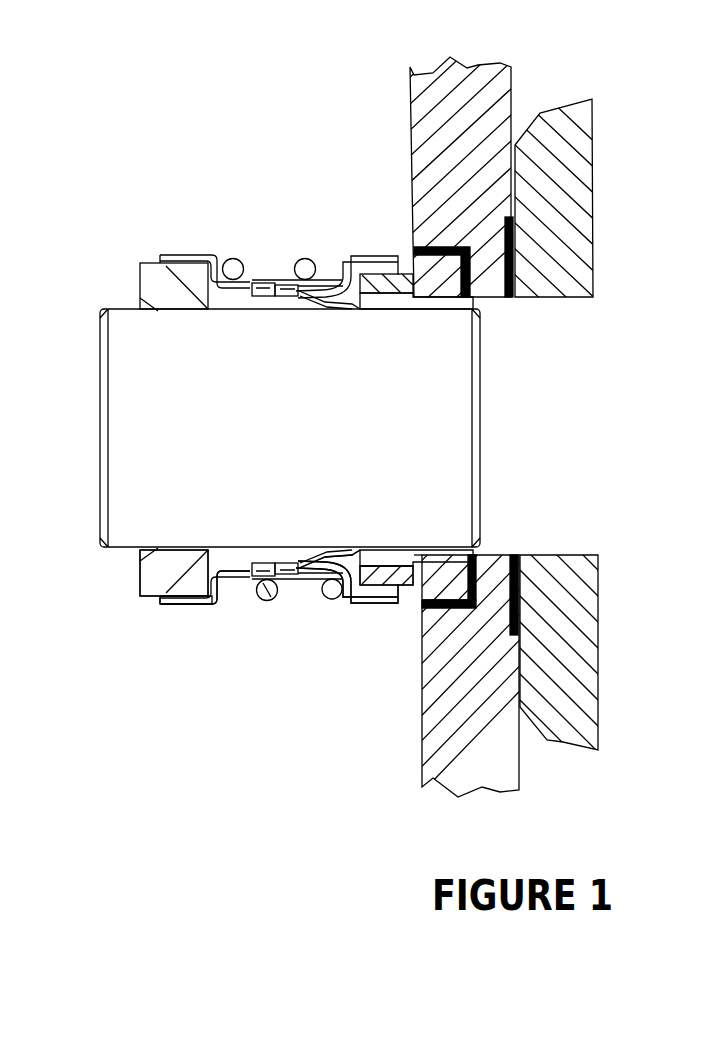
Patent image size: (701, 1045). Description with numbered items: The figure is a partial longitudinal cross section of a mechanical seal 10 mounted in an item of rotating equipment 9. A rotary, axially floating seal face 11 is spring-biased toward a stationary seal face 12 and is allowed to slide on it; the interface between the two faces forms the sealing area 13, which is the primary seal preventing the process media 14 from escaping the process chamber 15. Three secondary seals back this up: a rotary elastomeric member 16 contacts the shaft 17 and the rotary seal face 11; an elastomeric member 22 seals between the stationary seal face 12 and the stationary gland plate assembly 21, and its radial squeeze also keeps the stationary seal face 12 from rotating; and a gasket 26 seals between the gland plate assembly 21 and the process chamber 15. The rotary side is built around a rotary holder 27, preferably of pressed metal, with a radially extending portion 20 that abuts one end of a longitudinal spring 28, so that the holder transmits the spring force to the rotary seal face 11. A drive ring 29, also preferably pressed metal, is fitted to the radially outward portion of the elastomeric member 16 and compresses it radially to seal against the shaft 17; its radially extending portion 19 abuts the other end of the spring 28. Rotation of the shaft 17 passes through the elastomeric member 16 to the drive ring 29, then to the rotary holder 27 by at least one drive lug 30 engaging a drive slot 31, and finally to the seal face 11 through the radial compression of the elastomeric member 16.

The item of rotating equipment 9 is at (395, 107).
The mechanical seal 10 is at (276, 222).
The rotary seal face 11 is at (413, 575).
The stationary seal face 12 is at (422, 580).
The sealing area 13 is at (417, 560).
The process media 14 is at (508, 522).
The process chamber 15 is at (600, 575).
The rotary elastomeric member 16 is at (347, 548).
The shaft 17 is at (140, 550).
The radially extending portion 19 is at (223, 605).
The radially extending portion 20 is at (330, 563).
The stationary gland plate assembly 21 is at (456, 758).
The elastomeric member 22 is at (425, 593).
The gasket 26 is at (523, 598).
The rotary holder 27 is at (352, 607).
The longitudinal spring 28 is at (327, 603).
The drive ring 29 is at (180, 612).
The drive lug 30 is at (262, 283).
The drive slot 31 is at (236, 257).